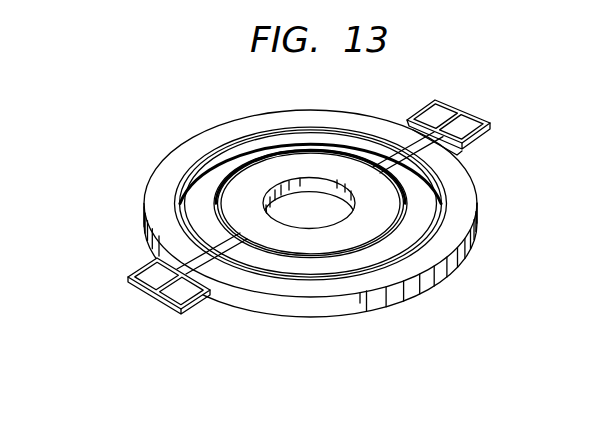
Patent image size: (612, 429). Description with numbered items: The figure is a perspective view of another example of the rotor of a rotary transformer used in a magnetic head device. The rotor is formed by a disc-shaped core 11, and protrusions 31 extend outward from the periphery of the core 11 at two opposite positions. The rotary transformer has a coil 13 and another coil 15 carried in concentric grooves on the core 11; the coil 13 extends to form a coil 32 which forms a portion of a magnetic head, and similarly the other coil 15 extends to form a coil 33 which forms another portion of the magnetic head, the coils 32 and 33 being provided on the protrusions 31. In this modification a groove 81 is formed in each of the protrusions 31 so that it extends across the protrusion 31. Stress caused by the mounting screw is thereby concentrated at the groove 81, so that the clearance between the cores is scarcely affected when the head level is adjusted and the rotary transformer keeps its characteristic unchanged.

The core 11 is at (452, 233).
The coil 13 is at (430, 243).
The coil 15 is at (404, 206).
The protrusion 31 is at (478, 151).
The coil 32 is at (128, 276).
The coil 33 is at (465, 98).
The groove 81 is at (408, 122).